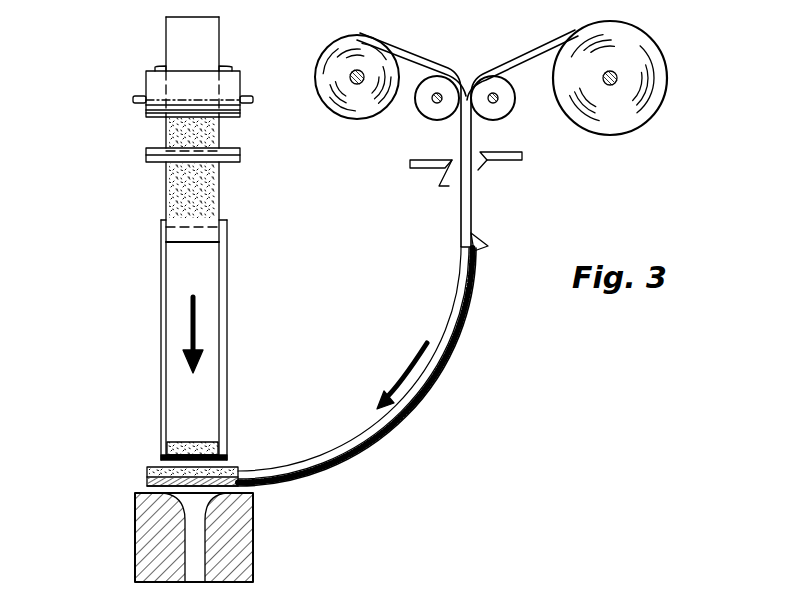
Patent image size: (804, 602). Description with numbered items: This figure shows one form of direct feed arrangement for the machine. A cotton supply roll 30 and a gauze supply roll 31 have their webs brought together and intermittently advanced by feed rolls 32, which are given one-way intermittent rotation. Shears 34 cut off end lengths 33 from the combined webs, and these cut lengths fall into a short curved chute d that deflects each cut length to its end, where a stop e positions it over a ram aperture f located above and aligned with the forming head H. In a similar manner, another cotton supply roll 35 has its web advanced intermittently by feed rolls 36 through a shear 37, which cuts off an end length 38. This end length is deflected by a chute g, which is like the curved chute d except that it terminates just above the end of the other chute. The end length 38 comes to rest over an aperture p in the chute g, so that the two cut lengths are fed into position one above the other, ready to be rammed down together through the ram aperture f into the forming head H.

The cotton supply roll 30 is at (655, 103).
The gauze supply roll 31 is at (379, 34).
The feed rolls 32 is at (489, 83).
The end lengths 33 is at (225, 470).
The shears 34 is at (490, 163).
The cotton supply roll 35 is at (214, 236).
The feed rolls 36 is at (226, 86).
The shear 37 is at (146, 166).
The end length 38 is at (190, 444).
The chute g is at (160, 348).
The curved chute d is at (450, 363).
The aperture p is at (176, 461).
The stop e is at (146, 478).
The ram aperture f is at (190, 486).
The forming head H is at (255, 573).